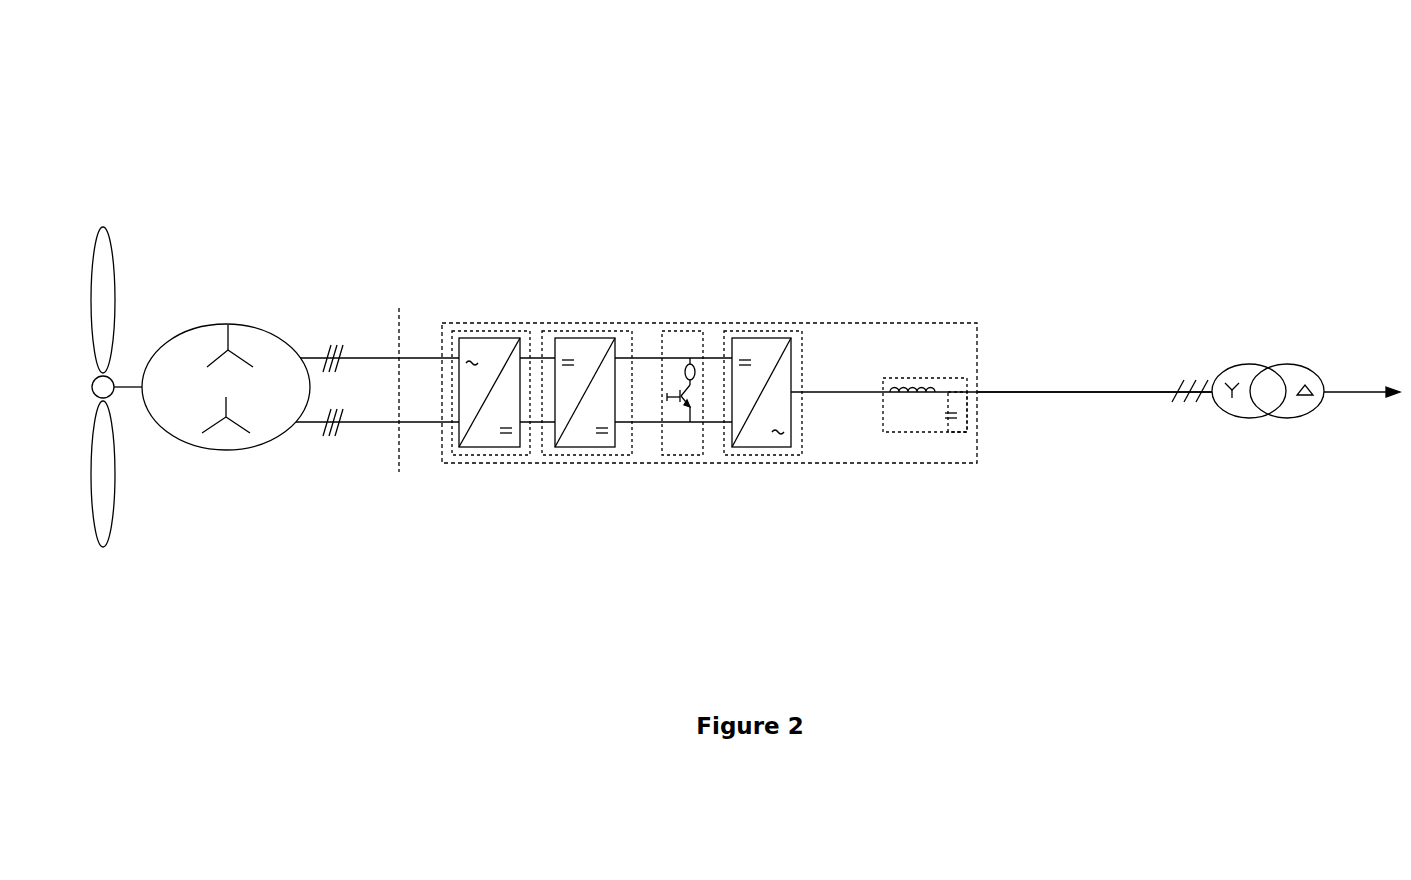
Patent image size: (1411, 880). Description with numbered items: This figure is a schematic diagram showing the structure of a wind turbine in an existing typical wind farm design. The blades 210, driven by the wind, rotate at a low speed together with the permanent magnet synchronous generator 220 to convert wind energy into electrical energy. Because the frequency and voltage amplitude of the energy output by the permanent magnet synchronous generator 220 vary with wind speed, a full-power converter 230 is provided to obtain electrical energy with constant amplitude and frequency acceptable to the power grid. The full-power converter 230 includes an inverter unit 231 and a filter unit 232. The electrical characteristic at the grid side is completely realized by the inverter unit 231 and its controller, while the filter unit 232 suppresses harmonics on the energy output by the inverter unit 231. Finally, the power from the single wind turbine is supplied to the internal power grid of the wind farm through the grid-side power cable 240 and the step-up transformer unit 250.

The blades 210 is at (118, 260).
The permanent magnet synchronous generator 220 is at (232, 325).
The full-power converter 230 is at (718, 322).
The inverter unit of the full-power converter 231 is at (765, 447).
The filter unit of the full-power converter 232 is at (930, 432).
The grid-side power cable of the full-power converter 240 is at (1090, 392).
The step-up transformer unit 250 is at (1265, 418).